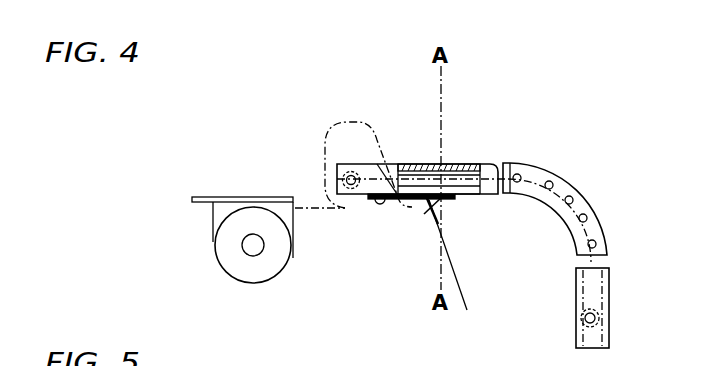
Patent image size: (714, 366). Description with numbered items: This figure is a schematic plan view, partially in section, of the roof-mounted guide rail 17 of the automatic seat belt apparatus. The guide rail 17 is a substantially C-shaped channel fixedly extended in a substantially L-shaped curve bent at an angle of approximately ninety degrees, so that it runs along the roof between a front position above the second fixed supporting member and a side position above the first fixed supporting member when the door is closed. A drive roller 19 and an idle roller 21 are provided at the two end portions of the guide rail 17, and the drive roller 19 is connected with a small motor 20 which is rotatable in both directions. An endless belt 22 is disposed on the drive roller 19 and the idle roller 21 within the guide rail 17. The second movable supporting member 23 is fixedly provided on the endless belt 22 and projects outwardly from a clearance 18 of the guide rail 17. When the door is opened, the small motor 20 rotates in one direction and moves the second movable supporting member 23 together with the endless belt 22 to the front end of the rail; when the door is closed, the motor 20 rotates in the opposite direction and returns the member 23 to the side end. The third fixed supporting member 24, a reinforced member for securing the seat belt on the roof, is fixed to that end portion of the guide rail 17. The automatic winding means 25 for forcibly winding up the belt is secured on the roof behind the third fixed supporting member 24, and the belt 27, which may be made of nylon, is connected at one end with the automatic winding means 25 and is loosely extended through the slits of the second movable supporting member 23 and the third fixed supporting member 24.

The guide rail 17 is at (529, 163).
The clearance 18 is at (466, 197).
The drive roller 19 is at (356, 177).
The small motor 20 is at (369, 125).
The idle roller 21 is at (594, 314).
The endless belt 22 is at (457, 163).
The second movable supporting member 23 is at (439, 211).
The third fixed supporting member 24 is at (420, 203).
The automatic winding means 25 is at (280, 253).
The belt 27 is at (465, 307).